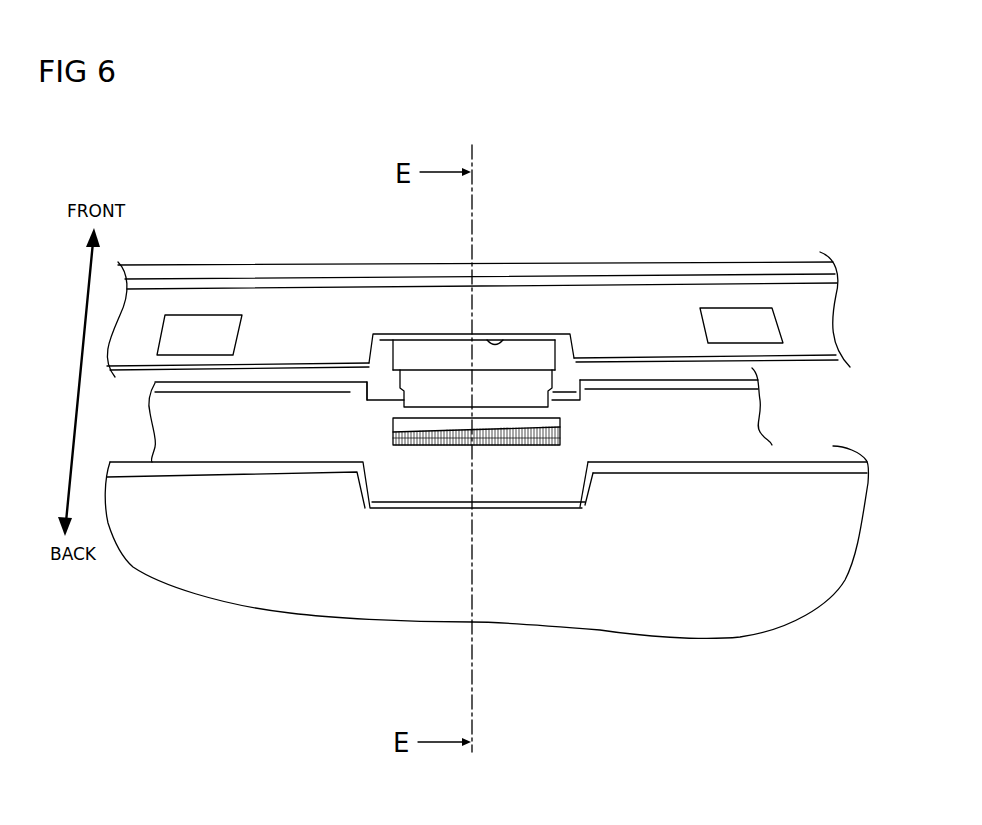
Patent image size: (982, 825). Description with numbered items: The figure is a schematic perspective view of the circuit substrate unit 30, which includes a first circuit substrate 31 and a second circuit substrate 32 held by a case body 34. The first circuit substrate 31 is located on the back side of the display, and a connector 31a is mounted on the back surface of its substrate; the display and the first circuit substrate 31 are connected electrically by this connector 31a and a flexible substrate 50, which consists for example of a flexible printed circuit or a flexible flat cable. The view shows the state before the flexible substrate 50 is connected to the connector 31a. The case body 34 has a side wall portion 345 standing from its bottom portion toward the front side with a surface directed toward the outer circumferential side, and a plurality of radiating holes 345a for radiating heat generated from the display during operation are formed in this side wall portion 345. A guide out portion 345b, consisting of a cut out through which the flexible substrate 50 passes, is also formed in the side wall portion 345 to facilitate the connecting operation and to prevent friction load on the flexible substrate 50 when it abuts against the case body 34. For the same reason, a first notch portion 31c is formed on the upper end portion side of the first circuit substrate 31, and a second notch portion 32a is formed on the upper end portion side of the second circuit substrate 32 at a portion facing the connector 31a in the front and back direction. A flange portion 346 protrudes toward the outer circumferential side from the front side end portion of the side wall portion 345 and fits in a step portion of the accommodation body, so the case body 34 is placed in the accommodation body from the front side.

The circuit substrate unit 30 is at (311, 174).
The first circuit substrate 31 is at (283, 425).
The connector 31a is at (390, 432).
The first notch portion 31c is at (573, 400).
The second circuit substrate 32 is at (660, 562).
The second notch portion 32a is at (583, 478).
The case body 34 is at (679, 232).
The side wall portion 345 is at (393, 308).
The radiating holes 345a is at (230, 337).
The guide out portion 345b is at (505, 338).
The flange portion 346 is at (595, 268).
The flexible substrate 50 is at (520, 383).